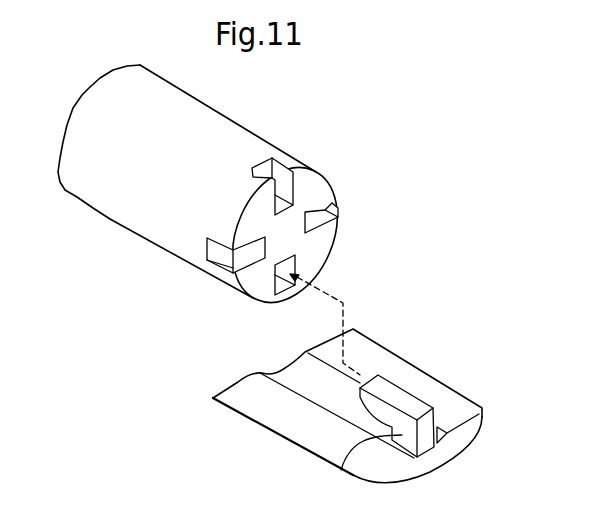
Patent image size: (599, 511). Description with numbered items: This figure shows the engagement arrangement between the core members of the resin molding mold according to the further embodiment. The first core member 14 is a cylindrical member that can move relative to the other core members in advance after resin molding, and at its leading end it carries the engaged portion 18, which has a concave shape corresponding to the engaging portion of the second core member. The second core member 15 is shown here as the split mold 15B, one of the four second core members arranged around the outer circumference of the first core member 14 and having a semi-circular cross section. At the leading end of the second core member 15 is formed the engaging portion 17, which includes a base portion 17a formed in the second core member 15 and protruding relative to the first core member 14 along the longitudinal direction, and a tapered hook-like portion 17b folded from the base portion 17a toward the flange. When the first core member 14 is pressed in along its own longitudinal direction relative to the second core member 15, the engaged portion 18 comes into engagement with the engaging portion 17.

The first core member 14 is at (118, 211).
The engaged portion 18 is at (293, 182).
The split mold 15B is at (336, 409).
The second core member 15 is at (275, 417).
The engaging portion 17 is at (396, 412).
The base portion 17a is at (345, 471).
The tapered hook-like portion 17b is at (387, 388).